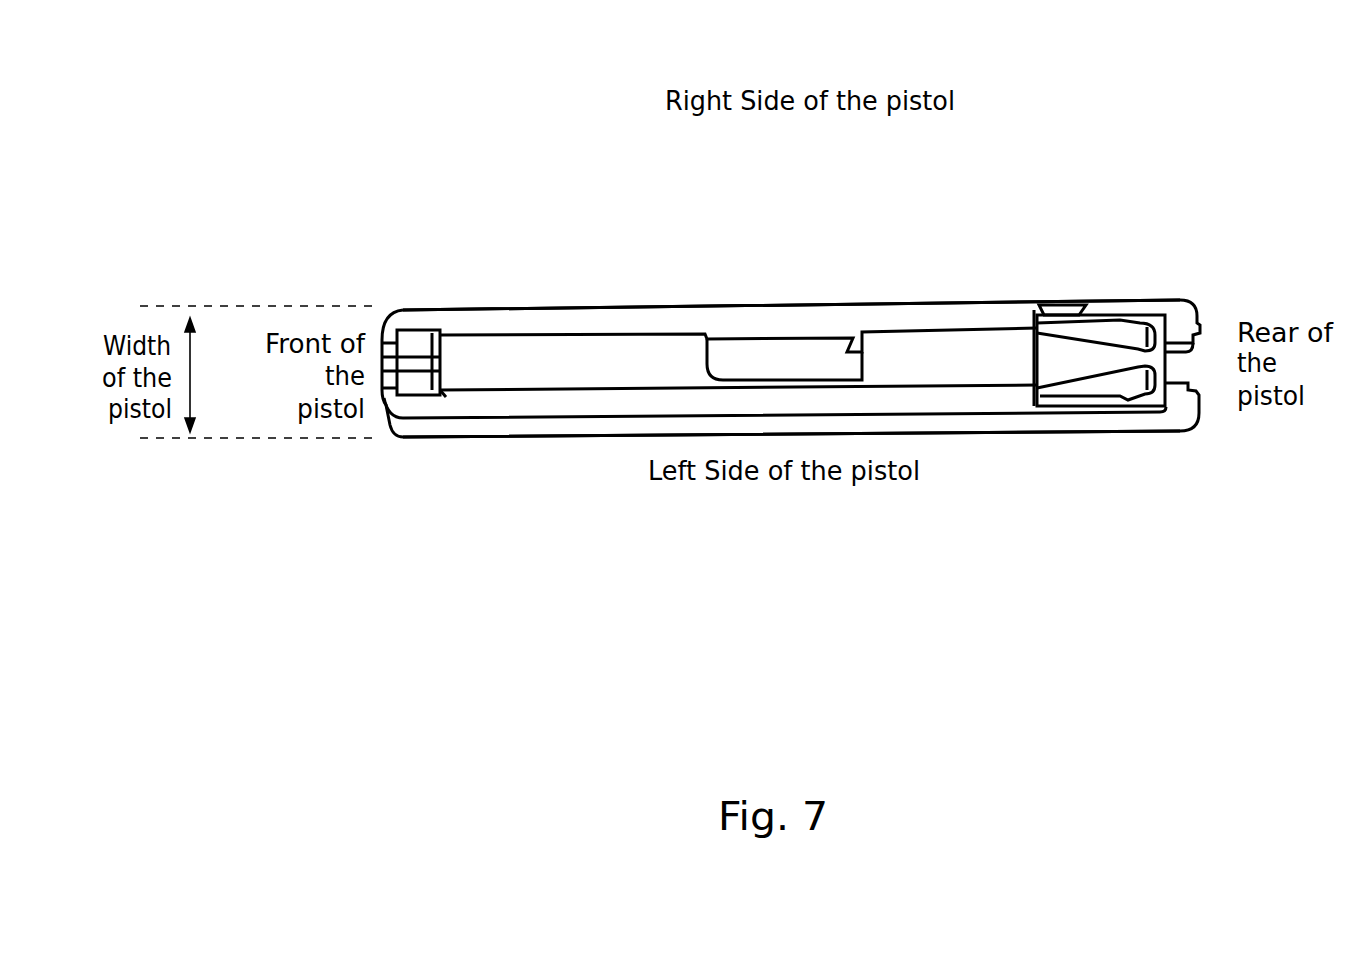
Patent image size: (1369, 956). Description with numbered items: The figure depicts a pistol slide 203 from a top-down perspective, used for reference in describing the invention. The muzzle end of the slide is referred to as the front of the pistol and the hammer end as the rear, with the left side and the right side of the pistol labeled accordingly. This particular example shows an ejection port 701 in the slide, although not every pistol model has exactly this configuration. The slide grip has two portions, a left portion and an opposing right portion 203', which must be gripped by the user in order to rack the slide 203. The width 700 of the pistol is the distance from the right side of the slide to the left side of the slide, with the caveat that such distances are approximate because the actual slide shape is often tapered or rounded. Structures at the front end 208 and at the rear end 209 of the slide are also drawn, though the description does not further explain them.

The width of the pistol 700 is at (124, 424).
The pistol slide 203 is at (738, 268).
The slide grip portions 203' is at (791, 372).
The front coupling member 208 is at (418, 352).
The rear coupling member 209 is at (1110, 332).
The ejection port 701 is at (787, 353).